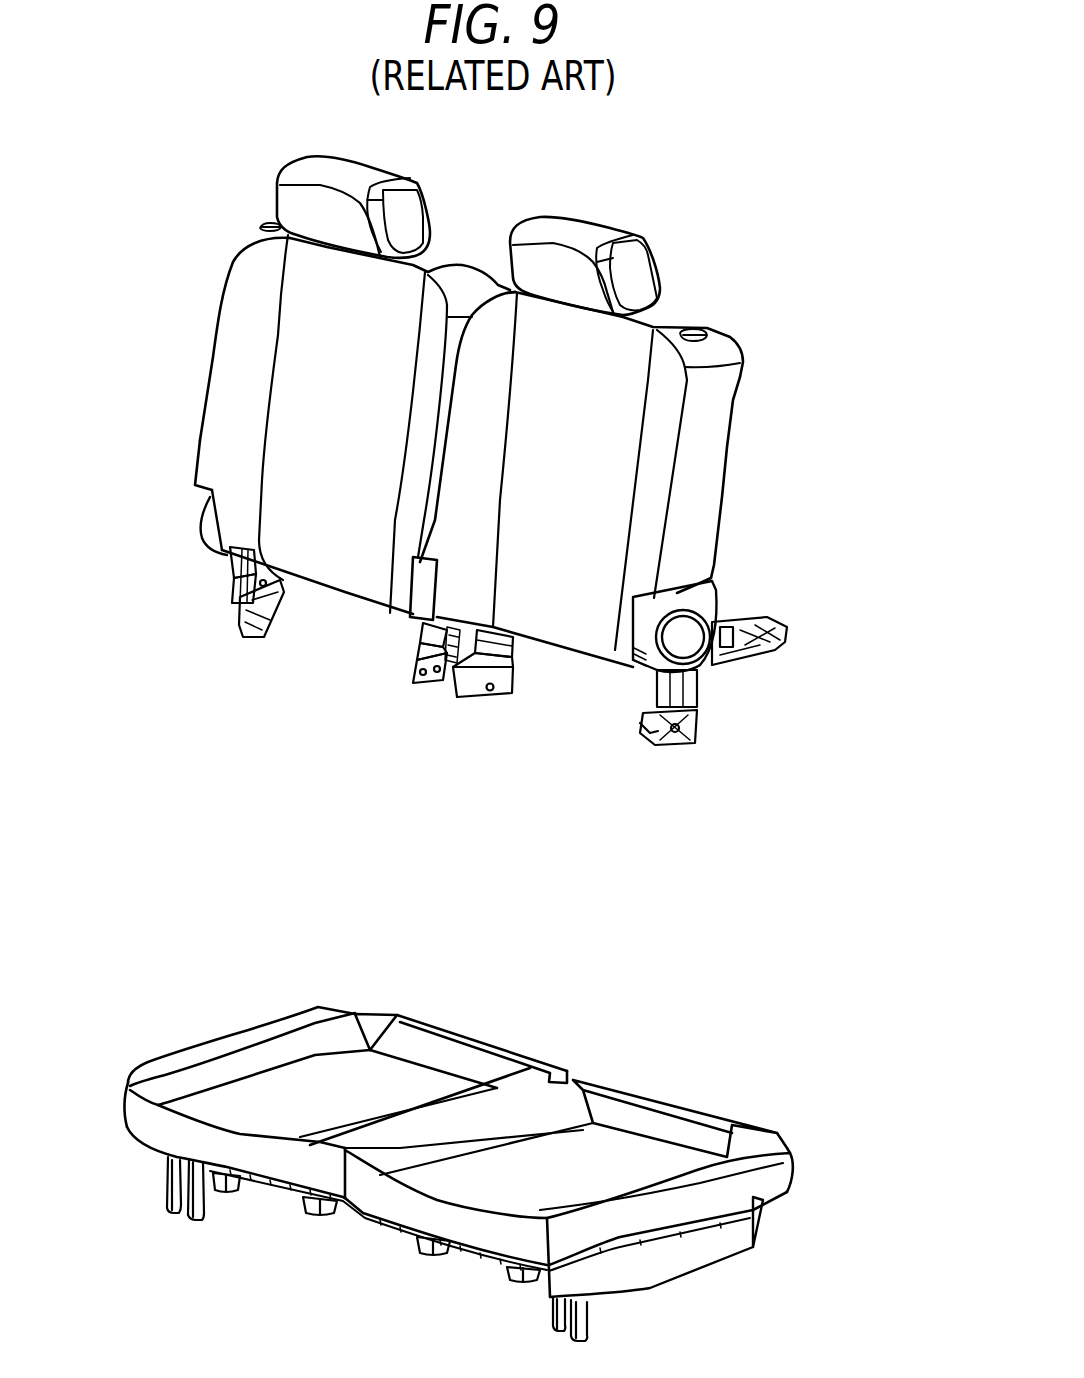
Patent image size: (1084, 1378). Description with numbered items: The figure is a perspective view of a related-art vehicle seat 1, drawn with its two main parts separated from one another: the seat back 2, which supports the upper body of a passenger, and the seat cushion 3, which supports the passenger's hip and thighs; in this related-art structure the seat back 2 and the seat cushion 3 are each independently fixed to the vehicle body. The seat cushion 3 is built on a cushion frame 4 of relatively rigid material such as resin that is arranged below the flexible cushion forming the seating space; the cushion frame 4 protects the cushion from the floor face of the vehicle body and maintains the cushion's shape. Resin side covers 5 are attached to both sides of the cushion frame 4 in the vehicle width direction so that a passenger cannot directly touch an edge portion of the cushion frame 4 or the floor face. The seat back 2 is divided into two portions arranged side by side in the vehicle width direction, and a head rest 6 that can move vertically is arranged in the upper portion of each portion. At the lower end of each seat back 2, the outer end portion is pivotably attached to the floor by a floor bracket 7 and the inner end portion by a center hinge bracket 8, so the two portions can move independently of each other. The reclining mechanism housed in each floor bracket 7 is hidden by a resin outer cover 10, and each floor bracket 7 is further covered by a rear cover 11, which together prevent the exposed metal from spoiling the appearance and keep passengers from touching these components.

The seat 1 is at (828, 1240).
The seat back 2 is at (222, 357).
The seat cushion 3 is at (693, 1110).
The cushion frame 4 is at (257, 1190).
The side cover 5 is at (687, 1265).
The head rest 6 is at (420, 213).
The floor bracket 7 is at (270, 613).
The center hinge bracket 8 is at (407, 673).
The outer cover 10 is at (200, 527).
The rear cover 11 is at (783, 620).